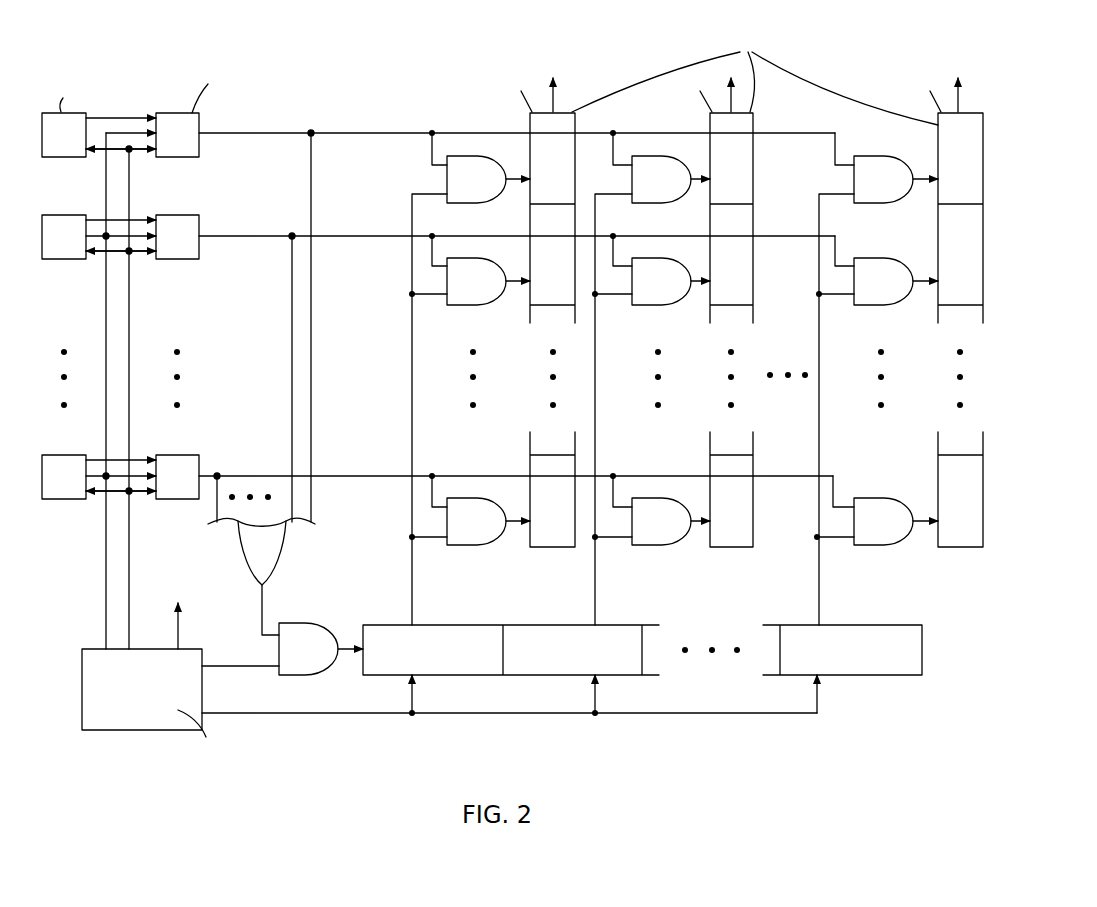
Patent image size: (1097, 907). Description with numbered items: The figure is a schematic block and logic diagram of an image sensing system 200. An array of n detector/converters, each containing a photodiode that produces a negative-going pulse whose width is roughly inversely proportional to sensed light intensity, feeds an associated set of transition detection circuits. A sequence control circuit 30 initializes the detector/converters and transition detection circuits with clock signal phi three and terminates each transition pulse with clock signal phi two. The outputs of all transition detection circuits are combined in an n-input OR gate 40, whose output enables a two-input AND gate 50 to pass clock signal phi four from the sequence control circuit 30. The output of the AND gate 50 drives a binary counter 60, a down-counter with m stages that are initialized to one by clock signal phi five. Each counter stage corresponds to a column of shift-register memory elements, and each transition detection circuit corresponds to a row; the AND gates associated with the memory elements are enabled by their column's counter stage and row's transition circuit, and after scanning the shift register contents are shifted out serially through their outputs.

The sequence control circuit 30 is at (150, 732).
The OR gate 40 is at (286, 540).
The AND gate 50 is at (297, 620).
The binary counter 60 is at (922, 641).
The image sensing system 200 is at (512, 407).